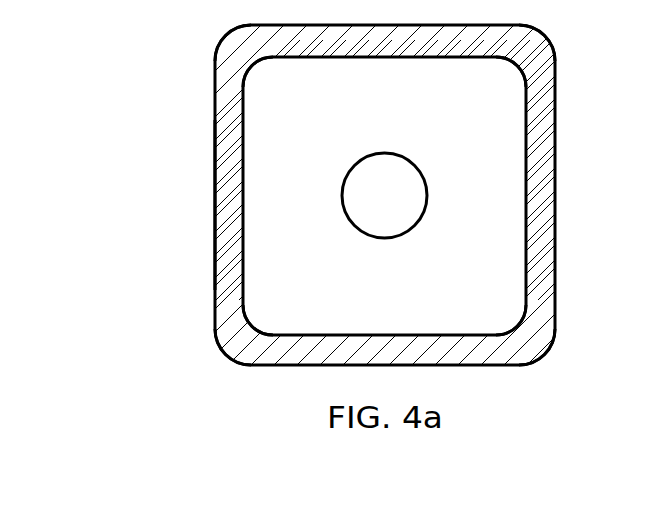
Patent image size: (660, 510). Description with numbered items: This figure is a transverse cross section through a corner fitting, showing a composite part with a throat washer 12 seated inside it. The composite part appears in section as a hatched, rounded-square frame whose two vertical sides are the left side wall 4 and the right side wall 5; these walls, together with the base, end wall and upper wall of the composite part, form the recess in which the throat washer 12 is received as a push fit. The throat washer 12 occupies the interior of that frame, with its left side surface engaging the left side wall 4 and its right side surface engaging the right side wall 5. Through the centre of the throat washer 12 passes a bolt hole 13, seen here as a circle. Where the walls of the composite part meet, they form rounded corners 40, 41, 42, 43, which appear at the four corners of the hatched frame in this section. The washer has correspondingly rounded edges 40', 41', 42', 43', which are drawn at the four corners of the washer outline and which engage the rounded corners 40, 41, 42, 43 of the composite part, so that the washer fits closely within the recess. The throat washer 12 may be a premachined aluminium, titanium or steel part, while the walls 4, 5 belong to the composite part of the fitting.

The left side wall 4 is at (555, 205).
The right side wall 5 is at (215, 205).
The throat washer 12 is at (310, 232).
The bolt hole 13 is at (427, 190).
The rounded corner 40 is at (503, 301).
The rounded corner 41 is at (272, 306).
The rounded corner 42 is at (278, 90).
The rounded corner 43 is at (495, 89).
The rounded edge 40' is at (574, 338).
The rounded edge 41' is at (202, 315).
The rounded edge 42' is at (200, 47).
The rounded edge 43' is at (582, 65).